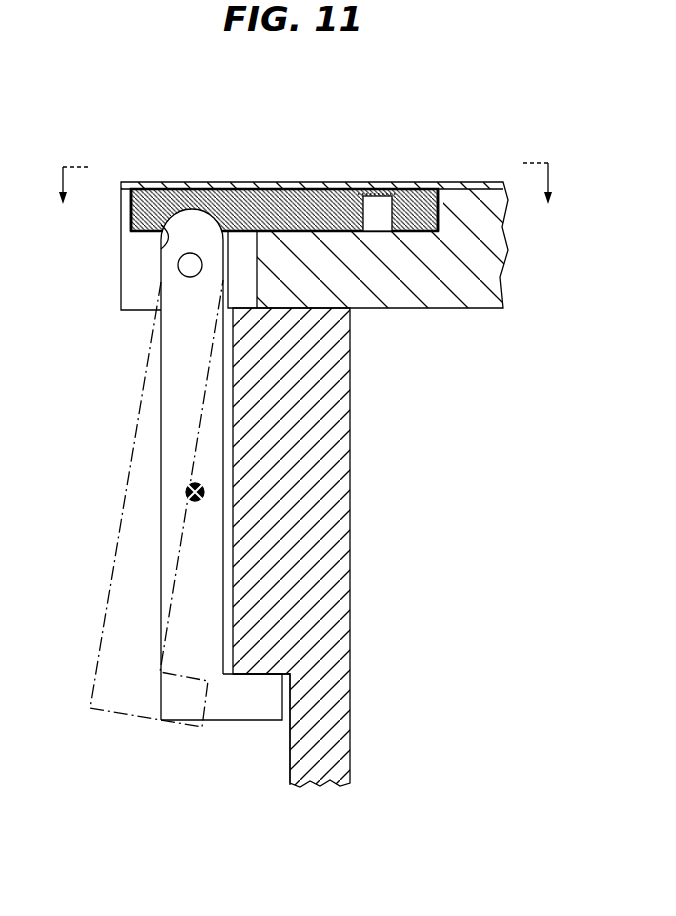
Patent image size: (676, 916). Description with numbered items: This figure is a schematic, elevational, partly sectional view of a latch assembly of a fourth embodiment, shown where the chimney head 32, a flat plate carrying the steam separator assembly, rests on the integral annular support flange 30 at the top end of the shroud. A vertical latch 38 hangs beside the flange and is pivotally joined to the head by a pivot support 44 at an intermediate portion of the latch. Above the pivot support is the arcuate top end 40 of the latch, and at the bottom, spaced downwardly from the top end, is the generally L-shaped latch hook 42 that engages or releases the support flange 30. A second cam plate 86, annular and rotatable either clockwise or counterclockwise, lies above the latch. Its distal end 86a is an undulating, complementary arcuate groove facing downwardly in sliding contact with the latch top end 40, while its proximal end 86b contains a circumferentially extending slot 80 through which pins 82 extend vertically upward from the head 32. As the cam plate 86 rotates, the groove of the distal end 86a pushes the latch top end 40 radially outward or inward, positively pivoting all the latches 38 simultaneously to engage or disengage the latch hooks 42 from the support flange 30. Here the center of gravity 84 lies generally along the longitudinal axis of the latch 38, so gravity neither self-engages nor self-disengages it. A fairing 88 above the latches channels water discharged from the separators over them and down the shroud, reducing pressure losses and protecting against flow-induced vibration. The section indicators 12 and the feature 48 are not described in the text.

The section line 12 is at (307, 197).
The support flange 30 is at (353, 508).
The head 32 is at (440, 315).
The latch 38 is at (150, 486).
The top end 40 is at (172, 226).
The latch hook 42 is at (228, 722).
The pivot support 44 is at (181, 271).
The recess 48 is at (290, 678).
The slot 80 is at (376, 205).
The pins 82 is at (366, 189).
The center of gravity 84 is at (197, 502).
The second cam plate 86 is at (257, 205).
The distal end 86a is at (169, 189).
The proximal end 86b is at (450, 212).
The fairing 88 is at (219, 182).